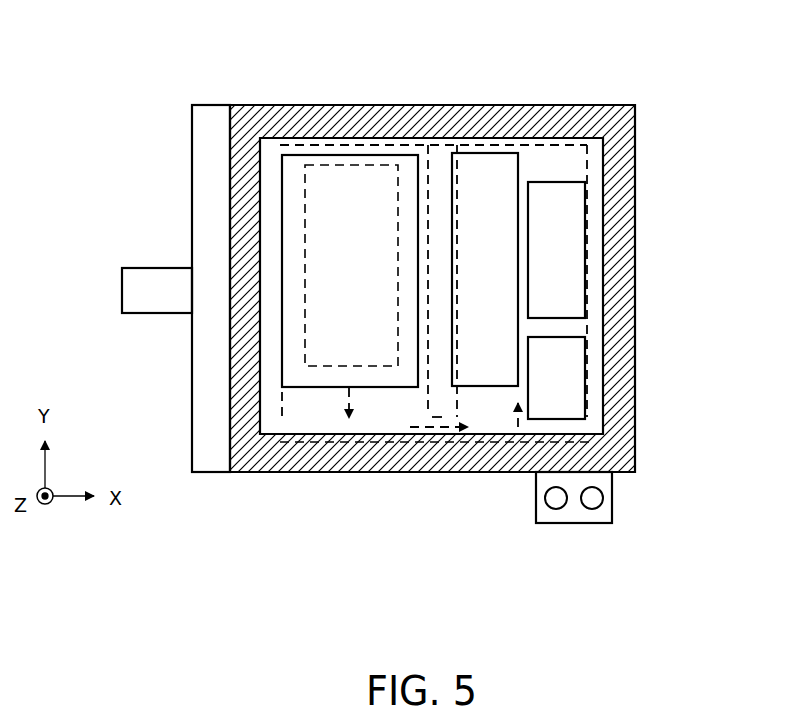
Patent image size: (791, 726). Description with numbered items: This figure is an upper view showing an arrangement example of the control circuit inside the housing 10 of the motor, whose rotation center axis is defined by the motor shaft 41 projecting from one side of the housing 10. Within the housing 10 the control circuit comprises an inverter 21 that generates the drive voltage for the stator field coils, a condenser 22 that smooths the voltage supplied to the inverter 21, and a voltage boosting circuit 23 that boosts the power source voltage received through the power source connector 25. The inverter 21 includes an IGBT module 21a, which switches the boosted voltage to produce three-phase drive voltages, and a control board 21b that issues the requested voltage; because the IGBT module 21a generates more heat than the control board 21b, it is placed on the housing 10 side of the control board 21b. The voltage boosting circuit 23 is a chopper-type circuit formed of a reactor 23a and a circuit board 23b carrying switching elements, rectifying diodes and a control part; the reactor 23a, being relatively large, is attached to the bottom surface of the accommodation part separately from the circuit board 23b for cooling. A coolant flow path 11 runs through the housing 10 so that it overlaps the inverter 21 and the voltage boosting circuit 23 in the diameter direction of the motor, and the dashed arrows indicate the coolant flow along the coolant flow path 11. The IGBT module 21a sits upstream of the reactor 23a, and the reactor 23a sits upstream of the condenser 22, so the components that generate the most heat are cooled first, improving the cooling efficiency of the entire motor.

The housing 10 is at (633, 152).
The coolant flow path 11 is at (282, 413).
The inverter 21 is at (340, 202).
The IGBT module 21a is at (307, 153).
The control board 21b is at (367, 163).
The condenser 22 is at (475, 162).
The voltage boosting circuit 23 is at (648, 300).
The reactor 23a is at (597, 388).
The circuit board 23b is at (596, 257).
The power source connector 25 is at (612, 513).
The motor shaft 41 is at (168, 315).